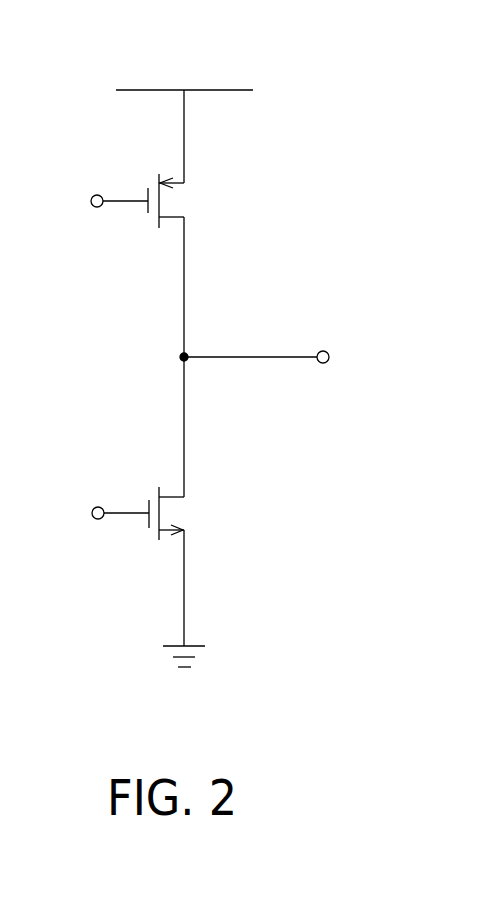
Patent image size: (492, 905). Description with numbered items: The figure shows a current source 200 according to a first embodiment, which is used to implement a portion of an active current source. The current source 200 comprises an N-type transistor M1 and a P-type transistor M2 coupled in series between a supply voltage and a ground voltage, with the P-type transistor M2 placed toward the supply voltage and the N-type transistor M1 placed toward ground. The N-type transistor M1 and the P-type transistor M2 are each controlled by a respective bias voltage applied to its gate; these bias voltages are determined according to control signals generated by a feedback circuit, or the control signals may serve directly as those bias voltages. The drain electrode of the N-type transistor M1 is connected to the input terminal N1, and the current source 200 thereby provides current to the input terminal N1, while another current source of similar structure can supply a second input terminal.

The current source 200 is at (365, 103).
The P-type transistor M2 is at (162, 201).
The N-type transistor M1 is at (162, 513).
The input terminal N1 is at (235, 358).